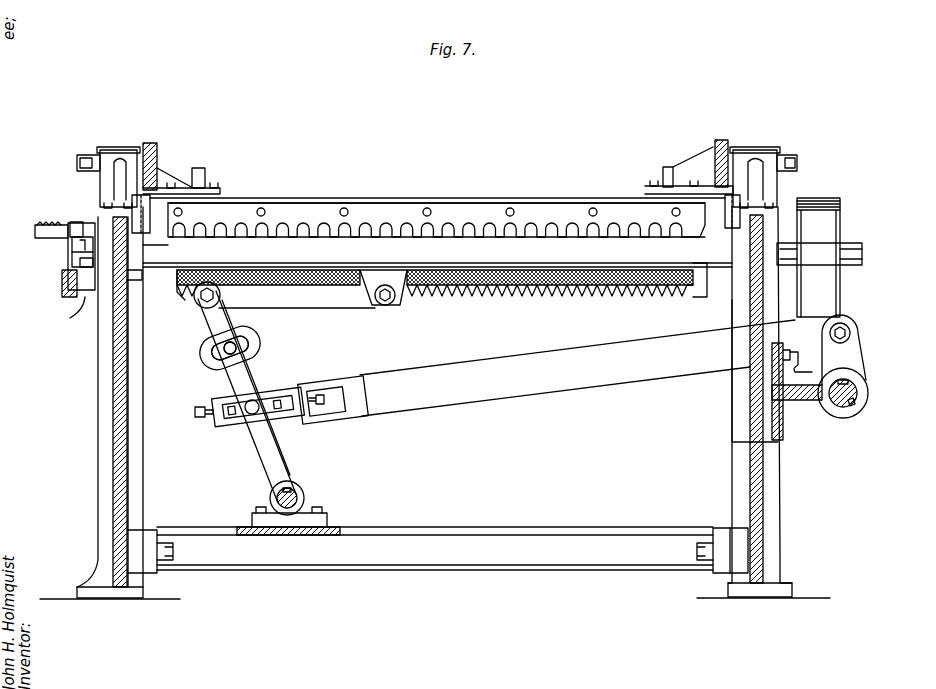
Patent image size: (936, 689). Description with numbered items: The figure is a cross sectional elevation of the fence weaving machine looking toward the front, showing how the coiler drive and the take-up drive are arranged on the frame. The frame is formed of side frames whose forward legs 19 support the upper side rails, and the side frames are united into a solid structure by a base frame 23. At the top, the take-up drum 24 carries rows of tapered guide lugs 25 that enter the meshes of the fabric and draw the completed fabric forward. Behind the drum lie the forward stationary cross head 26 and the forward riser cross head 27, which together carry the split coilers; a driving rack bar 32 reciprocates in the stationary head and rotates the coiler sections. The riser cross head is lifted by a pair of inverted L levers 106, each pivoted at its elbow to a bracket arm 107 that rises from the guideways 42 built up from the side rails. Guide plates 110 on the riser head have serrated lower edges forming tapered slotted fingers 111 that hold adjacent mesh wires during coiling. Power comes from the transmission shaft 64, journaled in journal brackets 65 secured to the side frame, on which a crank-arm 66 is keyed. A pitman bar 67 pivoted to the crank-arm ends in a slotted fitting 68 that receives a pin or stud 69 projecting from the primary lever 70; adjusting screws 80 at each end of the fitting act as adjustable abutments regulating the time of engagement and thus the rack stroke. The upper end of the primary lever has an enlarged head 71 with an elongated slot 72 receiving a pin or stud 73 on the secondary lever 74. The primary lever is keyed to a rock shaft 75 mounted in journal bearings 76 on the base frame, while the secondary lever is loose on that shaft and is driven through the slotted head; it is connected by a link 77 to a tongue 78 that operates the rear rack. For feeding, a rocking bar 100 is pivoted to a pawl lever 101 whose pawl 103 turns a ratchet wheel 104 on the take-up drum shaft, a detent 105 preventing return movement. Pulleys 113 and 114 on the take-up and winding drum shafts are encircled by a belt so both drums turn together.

The forward legs 19 is at (98, 406).
The base frame 23 is at (438, 550).
The take-up drum 24 is at (528, 290).
The guide lugs 25 is at (580, 292).
The forward stationary cross head 26 is at (452, 320).
The forward riser cross head 27 is at (446, 203).
The driving rack bar 32 is at (38, 237).
The guideways 42 is at (135, 202).
The transmission shaft 64 is at (866, 391).
The journal brackets 65 is at (800, 400).
The crank-arm 66 is at (862, 346).
The pitman bar 67 is at (577, 368).
The slotted fitting 68 is at (300, 420).
The pin or stud 69 is at (262, 392).
The primary lever 70 is at (250, 363).
The enlarged head 71 is at (203, 350).
The elongated slot 72 is at (214, 363).
The pin or stud 73 is at (245, 336).
The secondary lever 74 is at (202, 313).
The rock shaft 75 is at (302, 495).
The journal bearings 76 is at (326, 515).
The link 77 is at (352, 302).
The tongue 78 is at (396, 302).
The adjusting screw 80 is at (201, 418).
The rocking bar 100 is at (70, 290).
The pawl lever 101 is at (76, 222).
The pawl 103 is at (80, 240).
The ratchet wheel 104 is at (82, 314).
The detent 105 is at (80, 262).
The inverted L levers 106 is at (196, 166).
The bracket arm 107 is at (126, 139).
The guide plates 110 is at (302, 205).
The tapered slotted fingers 111 is at (393, 224).
The pulley 113 is at (840, 205).
The pulley 114 is at (798, 362).